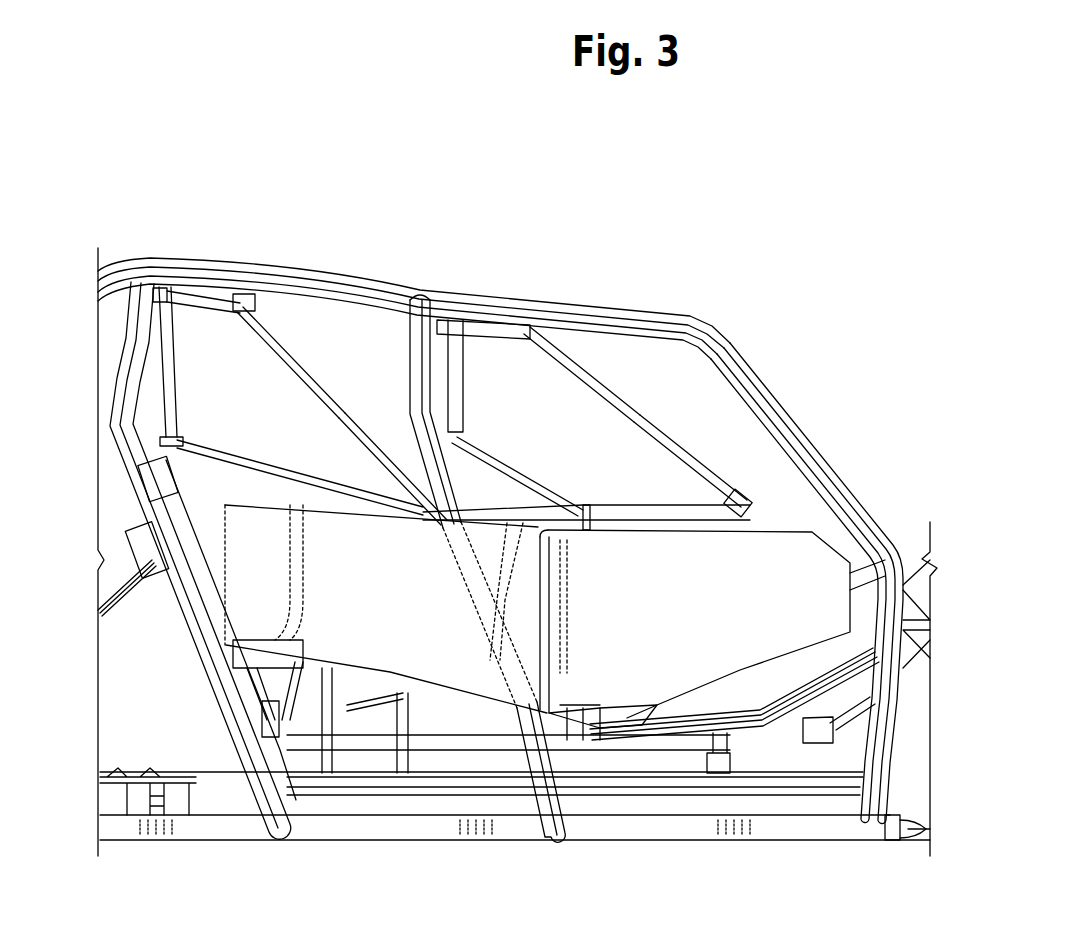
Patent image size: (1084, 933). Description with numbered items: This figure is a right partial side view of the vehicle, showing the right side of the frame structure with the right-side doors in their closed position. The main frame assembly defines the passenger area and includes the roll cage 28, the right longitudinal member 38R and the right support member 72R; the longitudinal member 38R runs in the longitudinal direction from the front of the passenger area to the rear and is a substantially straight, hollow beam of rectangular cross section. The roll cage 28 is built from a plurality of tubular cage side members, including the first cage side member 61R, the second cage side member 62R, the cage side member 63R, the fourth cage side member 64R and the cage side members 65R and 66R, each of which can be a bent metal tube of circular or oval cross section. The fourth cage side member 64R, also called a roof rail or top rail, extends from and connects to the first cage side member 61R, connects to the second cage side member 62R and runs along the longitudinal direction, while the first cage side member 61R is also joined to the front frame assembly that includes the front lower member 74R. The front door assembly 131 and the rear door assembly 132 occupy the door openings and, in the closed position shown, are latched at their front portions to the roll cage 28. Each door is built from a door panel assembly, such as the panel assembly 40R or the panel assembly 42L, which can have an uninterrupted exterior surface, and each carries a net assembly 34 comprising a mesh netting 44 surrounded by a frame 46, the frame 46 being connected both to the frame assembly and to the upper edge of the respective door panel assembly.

The roll cage 28 is at (556, 292).
The net assembly 34 is at (310, 353).
The longitudinal member 38R is at (507, 835).
The door panel assembly 40R is at (737, 653).
The door panel assembly 42L is at (367, 637).
The mesh netting 44 is at (200, 327).
The frame 46 is at (267, 330).
The first cage side member 61R is at (737, 372).
The second cage side member 62R is at (408, 330).
The cage side member 63R is at (133, 310).
The fourth cage side member 64R is at (628, 310).
The cage side member 65R is at (107, 266).
The cage side member 66R is at (383, 788).
The support member 72R is at (915, 582).
The front lower member 74R is at (922, 836).
The front door assembly 131 is at (792, 518).
The rear door assembly 132 is at (446, 692).